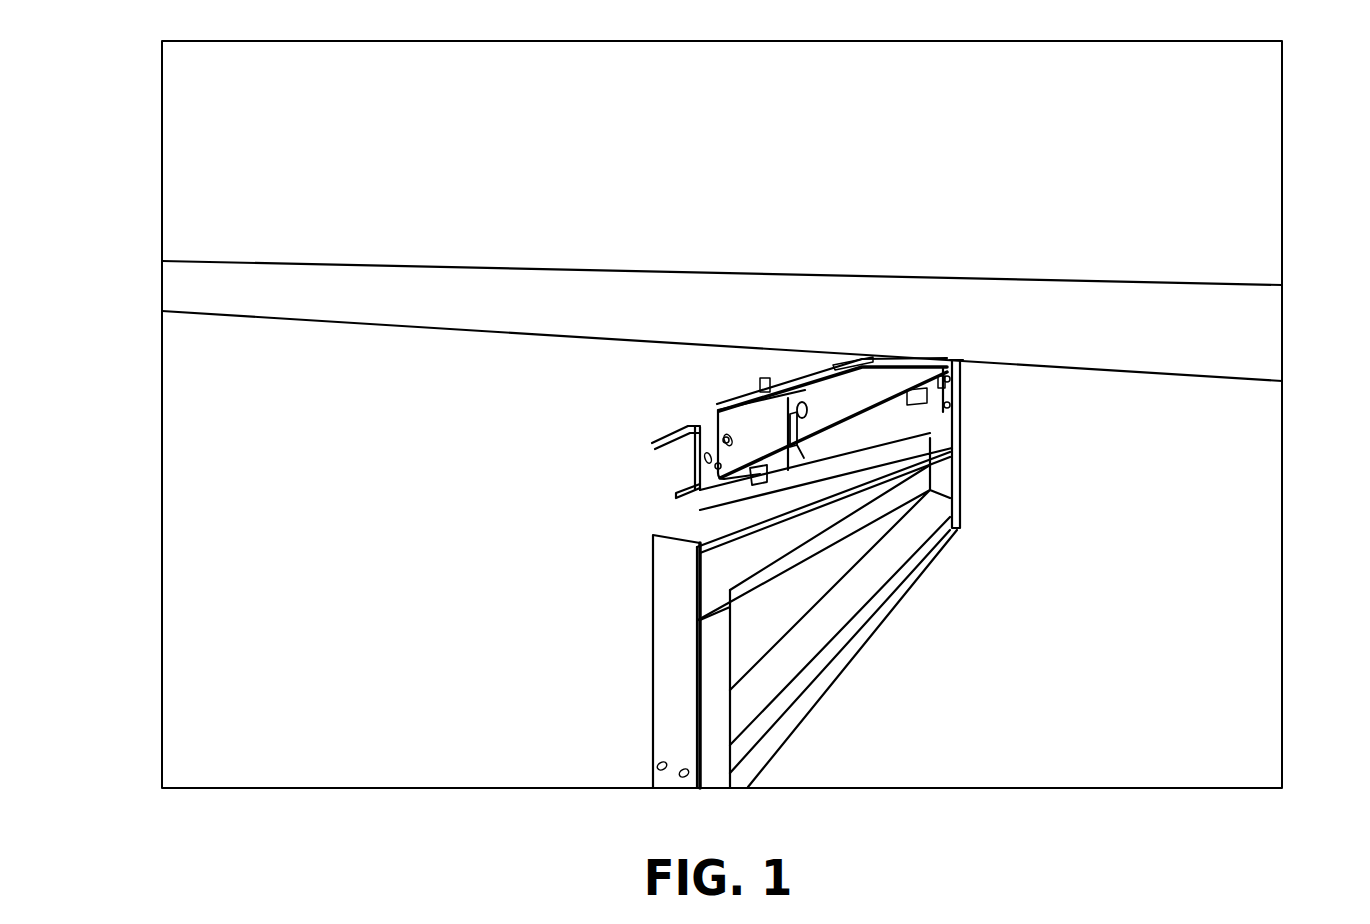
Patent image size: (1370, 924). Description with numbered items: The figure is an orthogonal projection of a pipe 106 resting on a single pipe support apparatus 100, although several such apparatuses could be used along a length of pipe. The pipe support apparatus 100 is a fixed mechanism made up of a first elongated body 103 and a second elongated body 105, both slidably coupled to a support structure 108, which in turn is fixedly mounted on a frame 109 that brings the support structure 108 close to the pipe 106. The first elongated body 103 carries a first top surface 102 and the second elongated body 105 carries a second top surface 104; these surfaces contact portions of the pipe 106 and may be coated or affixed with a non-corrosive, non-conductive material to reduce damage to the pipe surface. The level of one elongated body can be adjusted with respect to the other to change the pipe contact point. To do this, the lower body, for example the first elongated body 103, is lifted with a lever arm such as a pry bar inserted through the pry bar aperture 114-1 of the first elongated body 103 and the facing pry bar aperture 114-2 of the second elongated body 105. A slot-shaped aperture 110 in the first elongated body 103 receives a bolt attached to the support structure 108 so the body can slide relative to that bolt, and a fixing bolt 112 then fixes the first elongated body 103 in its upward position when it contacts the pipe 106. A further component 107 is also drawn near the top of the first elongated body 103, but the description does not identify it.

The pipe support apparatus 100 is at (972, 385).
The first top surface 102 is at (790, 394).
The first elongated body 103 is at (825, 400).
The second top surface 104 is at (702, 418).
The second elongated body 105 is at (690, 424).
The pipe 106 is at (1227, 327).
The mounting tab 107 is at (850, 363).
The support structure 108 is at (772, 485).
The frame 109 is at (878, 440).
The aperture 110 is at (782, 430).
The fixing bolt 112 is at (786, 428).
The pry bar aperture 114-1 is at (726, 440).
The pry bar aperture 114-2 is at (718, 466).